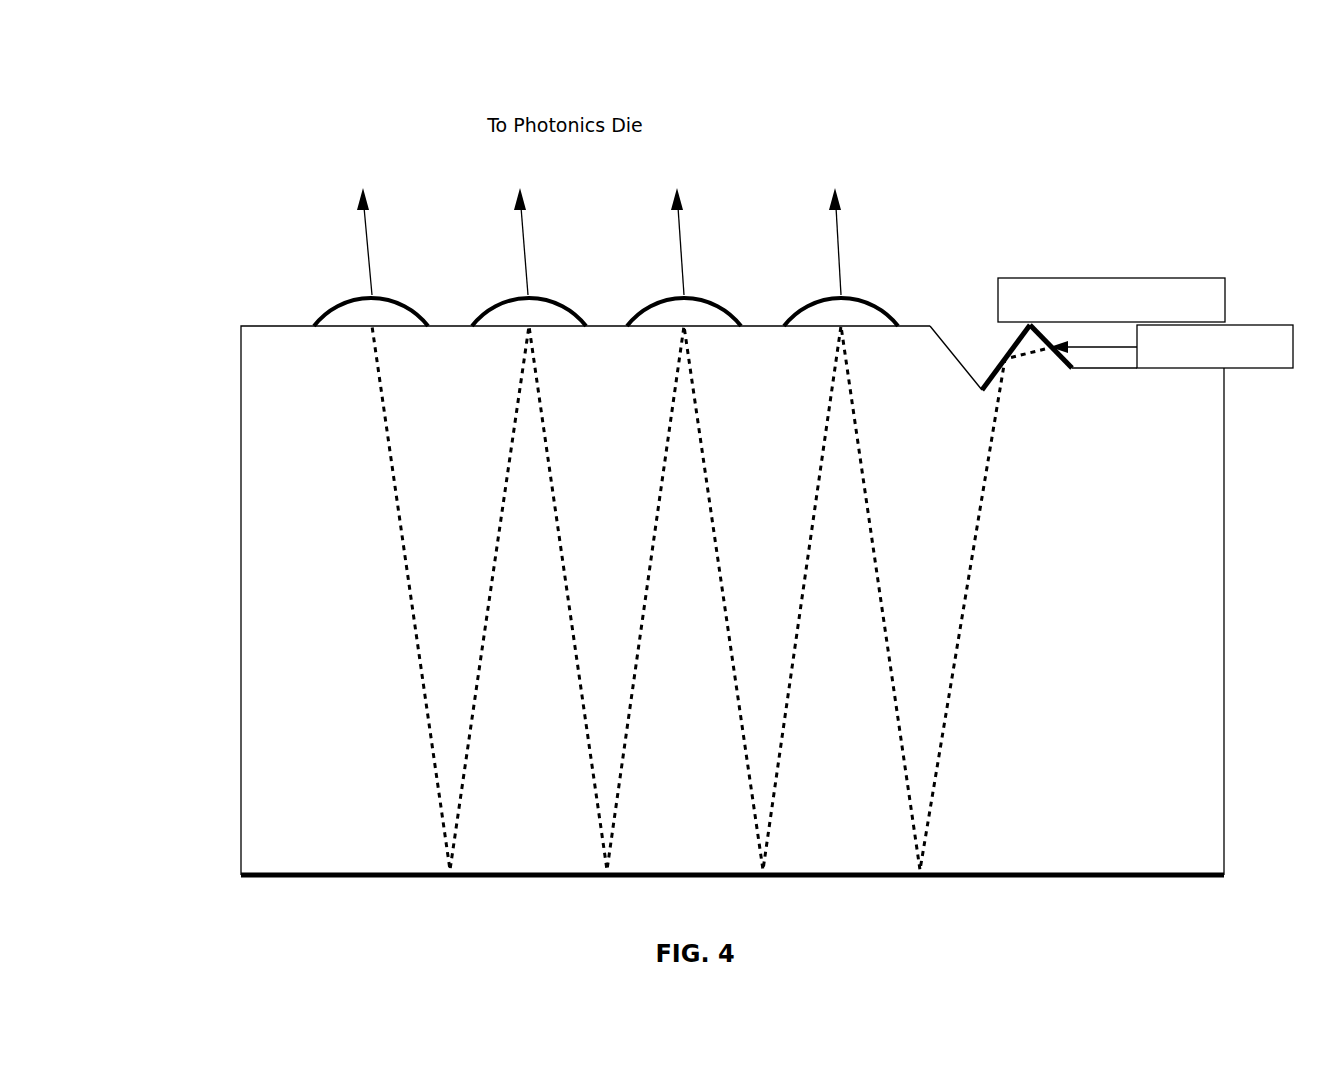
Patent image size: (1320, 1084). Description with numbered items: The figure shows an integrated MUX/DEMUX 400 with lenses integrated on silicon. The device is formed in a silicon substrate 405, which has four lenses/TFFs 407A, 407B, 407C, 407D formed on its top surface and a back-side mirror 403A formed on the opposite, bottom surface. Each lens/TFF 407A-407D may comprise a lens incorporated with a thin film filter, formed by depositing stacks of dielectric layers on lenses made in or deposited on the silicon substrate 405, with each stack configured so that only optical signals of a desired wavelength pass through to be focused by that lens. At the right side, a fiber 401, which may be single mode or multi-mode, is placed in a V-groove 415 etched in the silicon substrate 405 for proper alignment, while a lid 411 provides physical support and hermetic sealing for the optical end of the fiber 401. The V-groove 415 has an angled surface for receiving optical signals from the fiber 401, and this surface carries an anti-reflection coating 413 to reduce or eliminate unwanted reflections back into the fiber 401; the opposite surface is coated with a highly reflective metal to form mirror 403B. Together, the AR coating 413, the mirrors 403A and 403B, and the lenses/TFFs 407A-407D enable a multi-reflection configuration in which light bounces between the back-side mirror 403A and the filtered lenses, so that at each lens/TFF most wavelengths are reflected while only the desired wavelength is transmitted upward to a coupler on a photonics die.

The MUX/DEMUX 400 is at (222, 124).
The fiber 401 is at (1171, 346).
The back-side mirror 403A is at (1139, 870).
The mirror 403B is at (1015, 348).
The silicon substrate 405 is at (732, 600).
The lens/TFF 407A is at (826, 297).
The lens/TFF 407B is at (670, 297).
The lens/TFF 407C is at (508, 297).
The lens/TFF 407D is at (352, 297).
The lid 411 is at (1111, 300).
The anti-reflection coating 413 is at (1052, 352).
The V-groove 415 is at (1093, 360).